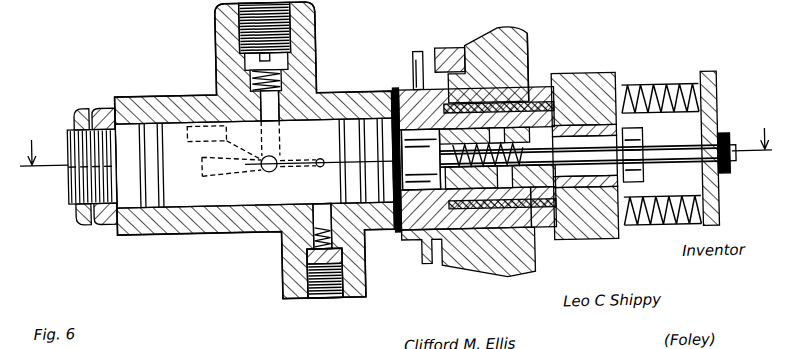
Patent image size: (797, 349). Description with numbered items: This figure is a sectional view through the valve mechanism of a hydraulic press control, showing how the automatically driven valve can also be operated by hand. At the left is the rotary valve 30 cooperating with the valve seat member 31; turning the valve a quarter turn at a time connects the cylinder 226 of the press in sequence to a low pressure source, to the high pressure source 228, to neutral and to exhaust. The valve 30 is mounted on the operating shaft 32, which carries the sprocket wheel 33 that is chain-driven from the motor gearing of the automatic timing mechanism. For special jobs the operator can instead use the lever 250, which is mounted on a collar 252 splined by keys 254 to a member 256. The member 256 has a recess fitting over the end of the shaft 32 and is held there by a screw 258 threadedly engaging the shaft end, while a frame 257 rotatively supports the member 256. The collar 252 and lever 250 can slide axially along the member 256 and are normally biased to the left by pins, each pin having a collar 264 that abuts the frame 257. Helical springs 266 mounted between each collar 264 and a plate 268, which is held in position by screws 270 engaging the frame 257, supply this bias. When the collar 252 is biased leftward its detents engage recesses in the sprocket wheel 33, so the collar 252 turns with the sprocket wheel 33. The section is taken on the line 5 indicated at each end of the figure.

The section line 5- 5 is at (395, 137).
The rotary valve 30 is at (173, 120).
The valve seat member 31 is at (337, 89).
The operating shaft 32 is at (412, 232).
The sprocket wheel 33 is at (417, 50).
The cylinder 226 is at (298, 290).
The high pressure source 228 is at (218, 16).
The lever 250 is at (524, 45).
The collar 252 is at (546, 100).
The keys 254 is at (548, 84).
The member 256 is at (590, 81).
The frame 257 is at (604, 221).
The screw 258 is at (642, 166).
The collar 264 is at (623, 84).
The helical springs 266 is at (670, 93).
The plate 268 is at (719, 123).
The screws 270 is at (723, 150).